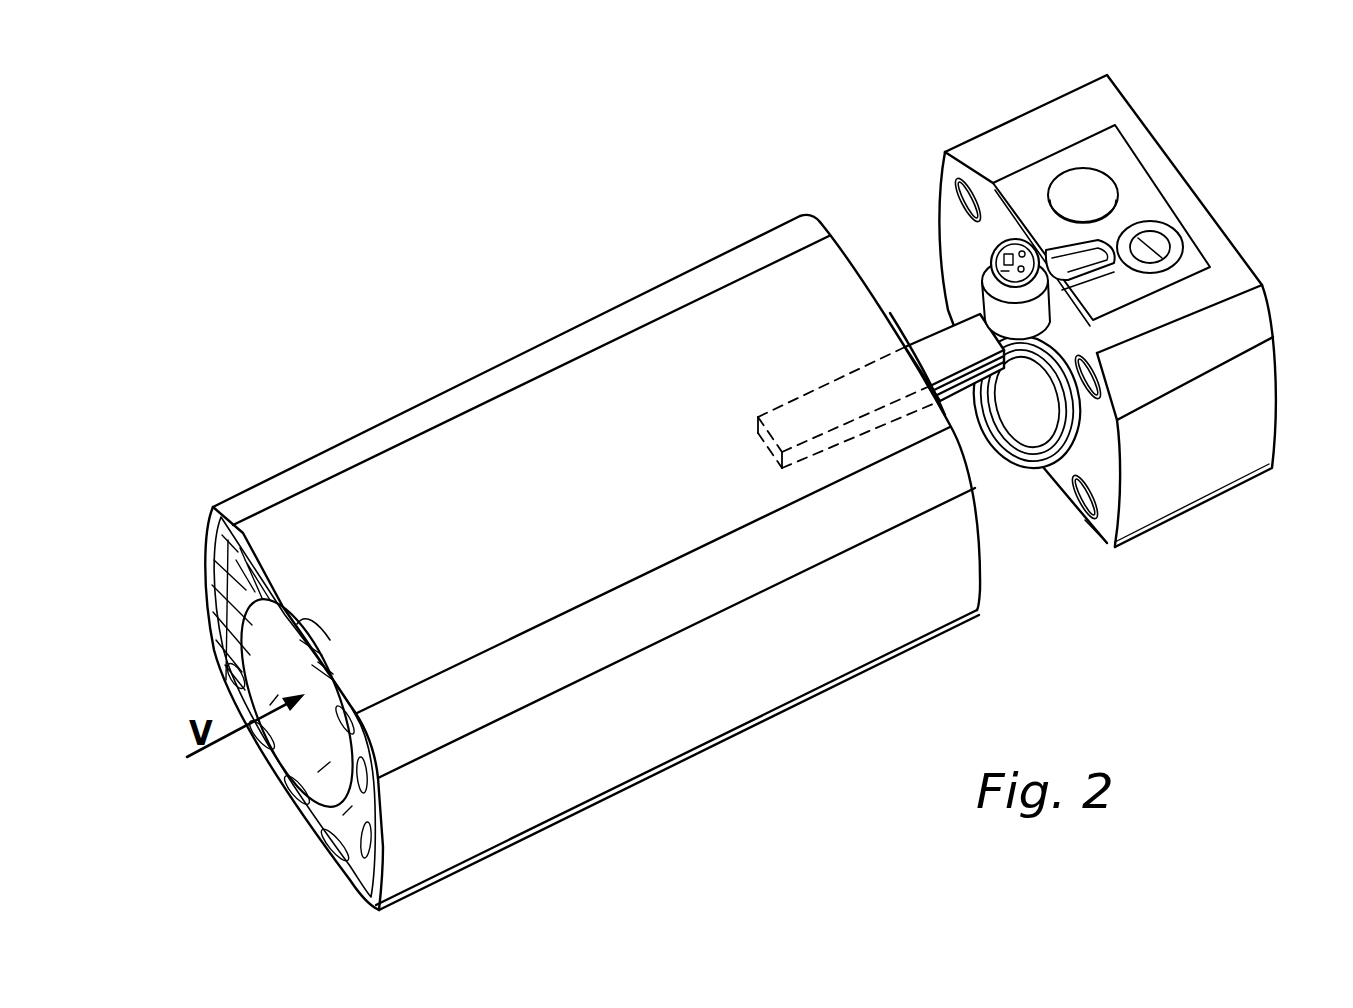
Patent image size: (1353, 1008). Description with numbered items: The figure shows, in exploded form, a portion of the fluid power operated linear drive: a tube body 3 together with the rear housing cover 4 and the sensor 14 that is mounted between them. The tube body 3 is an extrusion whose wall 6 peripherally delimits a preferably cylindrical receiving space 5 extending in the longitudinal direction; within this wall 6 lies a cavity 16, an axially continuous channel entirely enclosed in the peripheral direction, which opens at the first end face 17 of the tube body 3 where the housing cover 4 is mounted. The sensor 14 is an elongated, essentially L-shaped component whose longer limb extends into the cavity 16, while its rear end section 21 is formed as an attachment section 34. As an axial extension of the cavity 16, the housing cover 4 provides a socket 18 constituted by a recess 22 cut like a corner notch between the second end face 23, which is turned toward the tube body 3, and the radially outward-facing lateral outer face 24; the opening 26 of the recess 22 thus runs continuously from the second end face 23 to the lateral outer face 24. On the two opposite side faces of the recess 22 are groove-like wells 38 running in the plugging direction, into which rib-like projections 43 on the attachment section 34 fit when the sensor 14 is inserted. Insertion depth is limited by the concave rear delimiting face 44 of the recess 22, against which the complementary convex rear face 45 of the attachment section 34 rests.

The tube body 3 is at (611, 562).
The housing cover 4 is at (1132, 350).
The receiving space 5 is at (263, 640).
The wall 6 is at (300, 626).
The cavity 16 is at (325, 670).
The sensor 14 is at (927, 343).
The first end face 17 is at (980, 580).
The socket 18 is at (1134, 169).
The recess 22 is at (1068, 266).
The rear delimiting face 44 is at (1107, 268).
The lateral outer face 24 is at (1224, 266).
The rear face 45 is at (1137, 287).
The opening 26 is at (1058, 298).
The second end face 23 is at (1094, 535).
The wells 38 is at (1060, 242).
The projections 43 is at (1048, 355).
The rear end section 21 is at (1083, 402).
The attachment section 34 is at (1085, 340).